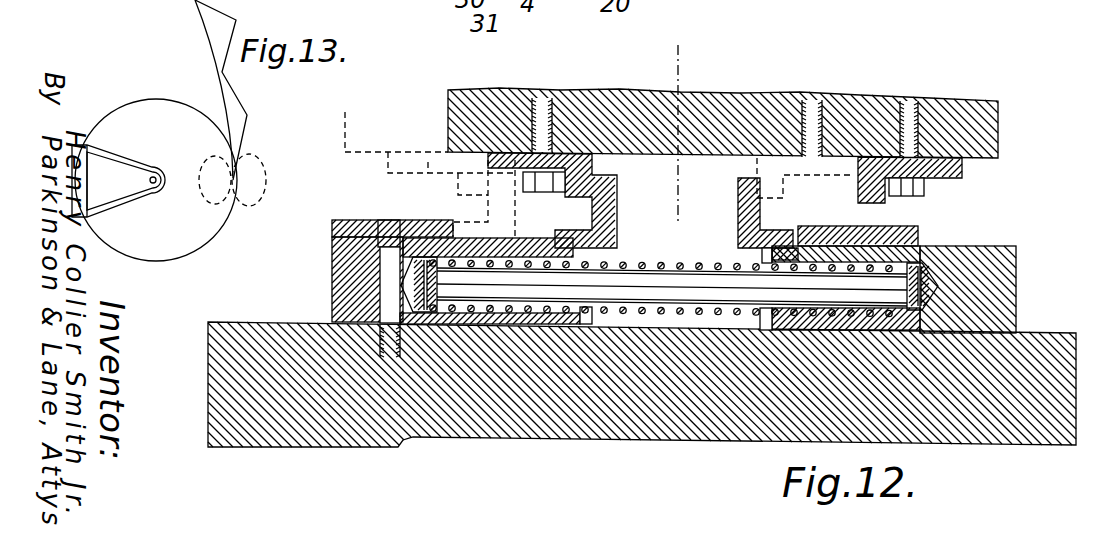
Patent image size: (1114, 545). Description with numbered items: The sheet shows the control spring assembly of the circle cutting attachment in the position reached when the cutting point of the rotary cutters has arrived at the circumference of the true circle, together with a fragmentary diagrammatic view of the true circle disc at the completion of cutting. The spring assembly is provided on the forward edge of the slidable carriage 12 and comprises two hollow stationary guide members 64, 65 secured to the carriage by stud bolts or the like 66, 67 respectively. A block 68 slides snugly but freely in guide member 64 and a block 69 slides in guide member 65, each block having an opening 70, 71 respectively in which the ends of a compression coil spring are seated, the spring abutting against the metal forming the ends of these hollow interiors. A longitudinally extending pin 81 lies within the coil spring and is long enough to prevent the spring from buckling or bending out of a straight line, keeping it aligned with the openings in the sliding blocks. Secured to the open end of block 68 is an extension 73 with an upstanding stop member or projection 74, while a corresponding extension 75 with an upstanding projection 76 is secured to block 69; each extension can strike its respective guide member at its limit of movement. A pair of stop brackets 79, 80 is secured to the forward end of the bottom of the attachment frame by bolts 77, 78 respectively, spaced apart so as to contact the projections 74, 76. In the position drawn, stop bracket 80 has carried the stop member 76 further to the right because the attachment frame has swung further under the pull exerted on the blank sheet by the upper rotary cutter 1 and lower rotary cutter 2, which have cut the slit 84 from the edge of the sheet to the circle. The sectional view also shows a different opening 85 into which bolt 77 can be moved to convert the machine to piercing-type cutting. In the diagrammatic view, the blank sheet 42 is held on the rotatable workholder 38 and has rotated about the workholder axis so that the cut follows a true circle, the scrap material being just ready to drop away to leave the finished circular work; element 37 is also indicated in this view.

In FIG. 13, the upper rotary cutter 1 is at (257, 192).
In FIG. 13, the lower rotary cutter 2 is at (233, 197).
In FIG. 13, the clamp arm 37 is at (135, 141).
In FIG. 13, the rotatable workholder 38 is at (163, 170).
In FIG. 13, the blank sheet 42 is at (187, 237).
In FIG. 13, the slit 84 is at (242, 139).
In FIG. 12, the slidable carriage 12 is at (1042, 333).
In FIG. 12, the hollow stationary guide member 64 is at (866, 236).
In FIG. 12, the hollow stationary guide member 65 is at (366, 220).
In FIG. 12, the stud bolt 66 is at (824, 228).
In FIG. 12, the stud bolt 67 is at (380, 296).
In FIG. 12, the sliding block 68 is at (1018, 252).
In FIG. 12, the sliding block 69 is at (332, 244).
In FIG. 12, the opening 70 is at (930, 283).
In FIG. 12, the opening 71 is at (542, 260).
In FIG. 12, the extension 73 is at (783, 230).
In FIG. 12, the upstanding stop member 74 is at (738, 212).
In FIG. 12, the extension 75 is at (567, 324).
In FIG. 12, the upstanding stop member 76 is at (618, 196).
In FIG. 12, the bolt 77 is at (904, 197).
In FIG. 12, the bolt 78 is at (544, 192).
In FIG. 12, the stop bracket 79 is at (757, 165).
In FIG. 12, the stop bracket 80 is at (514, 152).
In FIG. 12, the pin 81 is at (654, 271).
In FIG. 12, the opening 85 is at (845, 92).